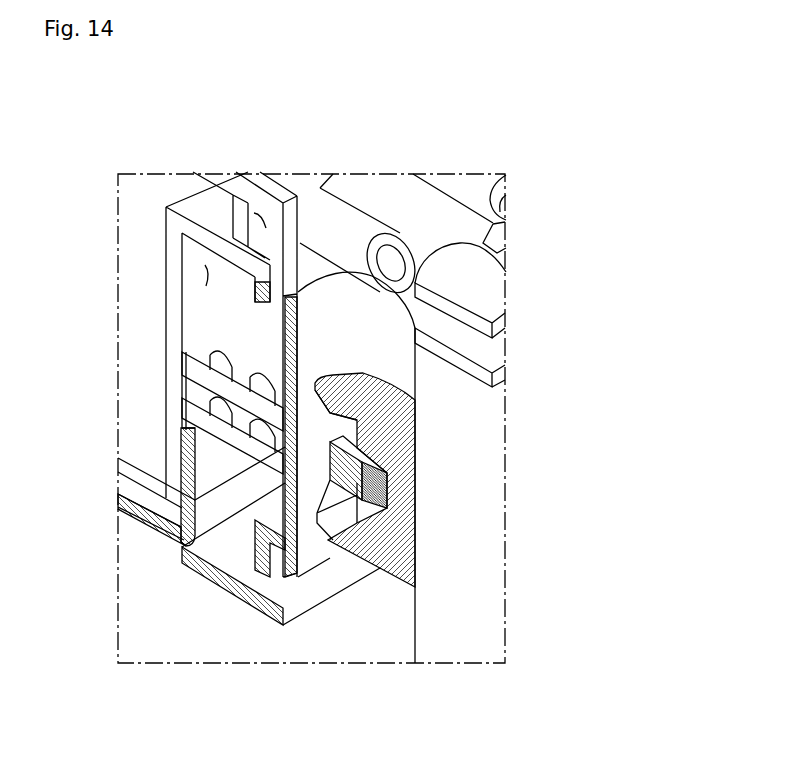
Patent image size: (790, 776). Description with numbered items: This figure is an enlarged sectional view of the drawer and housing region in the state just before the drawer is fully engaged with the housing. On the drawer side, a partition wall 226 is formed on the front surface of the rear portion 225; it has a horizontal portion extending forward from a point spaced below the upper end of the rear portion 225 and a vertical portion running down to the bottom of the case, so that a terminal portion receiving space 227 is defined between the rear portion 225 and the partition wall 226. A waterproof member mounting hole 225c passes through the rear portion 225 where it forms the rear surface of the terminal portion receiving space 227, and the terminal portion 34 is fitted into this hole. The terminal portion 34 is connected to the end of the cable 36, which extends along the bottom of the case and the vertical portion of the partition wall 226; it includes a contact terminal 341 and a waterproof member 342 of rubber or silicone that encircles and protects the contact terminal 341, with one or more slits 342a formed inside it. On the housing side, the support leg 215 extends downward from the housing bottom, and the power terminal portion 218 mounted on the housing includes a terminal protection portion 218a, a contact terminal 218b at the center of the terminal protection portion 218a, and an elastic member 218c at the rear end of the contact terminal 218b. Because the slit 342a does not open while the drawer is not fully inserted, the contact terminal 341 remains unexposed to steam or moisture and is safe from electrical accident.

The terminal portion 34 is at (226, 716).
The cable 36 is at (147, 527).
The support leg 215 is at (478, 601).
The power terminal portion 218 is at (576, 458).
The terminal protection portion 218a is at (405, 460).
The contact terminal 218b is at (365, 513).
The elastic member 218c is at (372, 480).
The rear portion 225 is at (295, 262).
The waterproof member mounting hole 225c is at (283, 313).
The partition wall 226 is at (165, 299).
The terminal portion receiving space 227 is at (210, 275).
The contact terminal 341 is at (243, 415).
The waterproof member 342 is at (323, 520).
The slit 342a is at (303, 435).